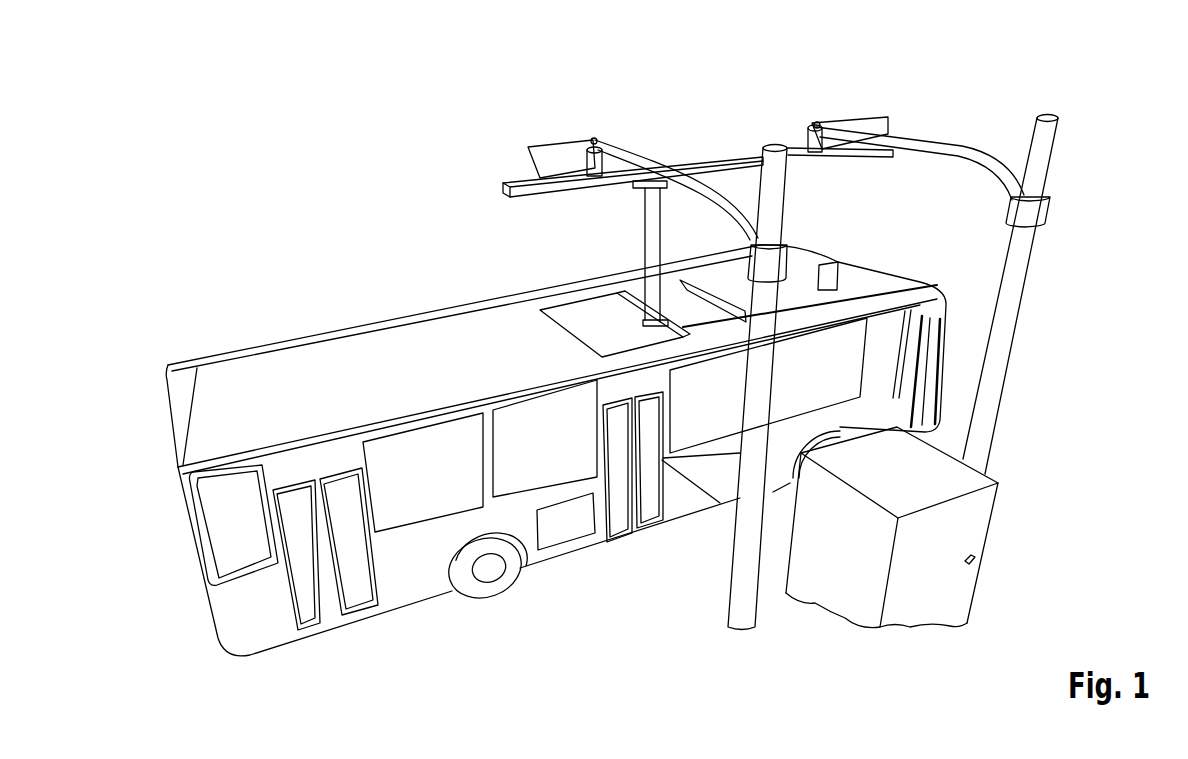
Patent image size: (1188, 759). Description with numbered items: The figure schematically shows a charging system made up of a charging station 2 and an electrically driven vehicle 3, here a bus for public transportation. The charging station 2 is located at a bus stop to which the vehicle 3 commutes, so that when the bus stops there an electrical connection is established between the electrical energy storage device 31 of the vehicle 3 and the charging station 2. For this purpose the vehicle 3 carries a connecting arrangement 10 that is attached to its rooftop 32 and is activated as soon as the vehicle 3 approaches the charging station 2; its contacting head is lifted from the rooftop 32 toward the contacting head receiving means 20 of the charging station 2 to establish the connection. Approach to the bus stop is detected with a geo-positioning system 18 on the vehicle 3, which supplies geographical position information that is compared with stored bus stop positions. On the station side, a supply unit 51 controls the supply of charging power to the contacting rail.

The charging station 2 is at (1033, 508).
The vehicle 3 is at (422, 291).
The connecting arrangement 10 is at (580, 315).
The geo-positioning system 18 is at (831, 266).
The contacting head receiving means 20 is at (513, 187).
The electrical energy storage device 31 is at (570, 532).
The rooftop 32 is at (270, 358).
The supply unit 51 is at (972, 538).